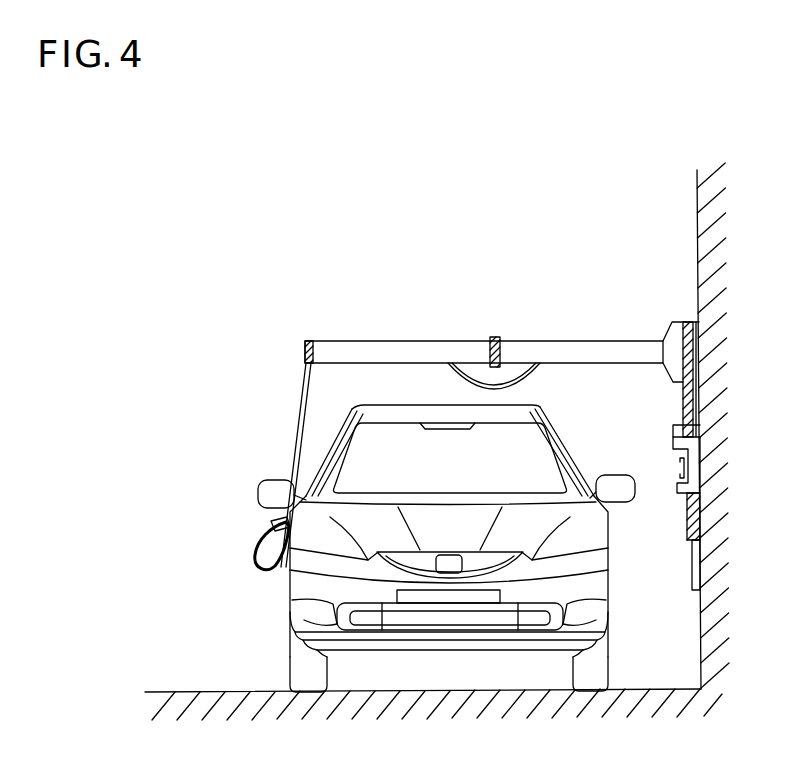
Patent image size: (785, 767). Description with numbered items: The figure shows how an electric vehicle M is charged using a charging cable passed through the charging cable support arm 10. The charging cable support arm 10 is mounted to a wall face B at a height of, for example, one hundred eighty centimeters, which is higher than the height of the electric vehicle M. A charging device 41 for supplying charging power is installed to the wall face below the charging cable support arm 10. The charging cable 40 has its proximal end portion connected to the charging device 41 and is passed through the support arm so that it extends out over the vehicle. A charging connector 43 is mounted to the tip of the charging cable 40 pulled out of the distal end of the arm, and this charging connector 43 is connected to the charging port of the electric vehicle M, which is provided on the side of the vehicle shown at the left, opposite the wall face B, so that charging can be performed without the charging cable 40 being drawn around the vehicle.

The wall face B is at (698, 197).
The charging cable support arm 10 is at (585, 341).
The charging cable 40 is at (518, 384).
The charging device 41 is at (673, 444).
The charging connector 43 is at (270, 522).
The electric vehicle M is at (369, 404).